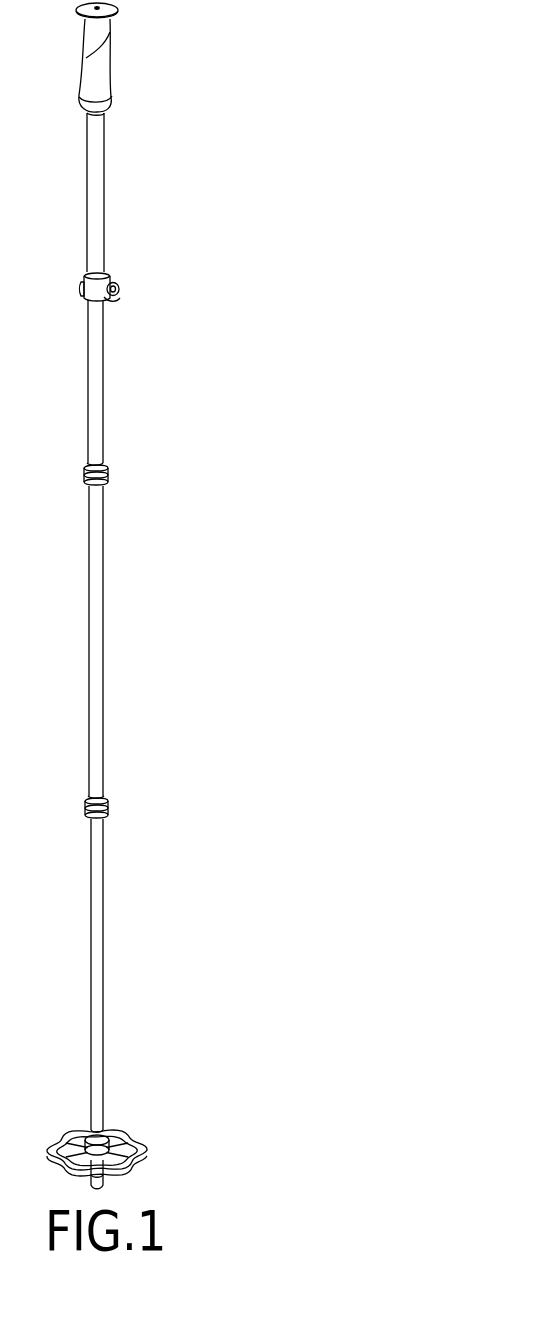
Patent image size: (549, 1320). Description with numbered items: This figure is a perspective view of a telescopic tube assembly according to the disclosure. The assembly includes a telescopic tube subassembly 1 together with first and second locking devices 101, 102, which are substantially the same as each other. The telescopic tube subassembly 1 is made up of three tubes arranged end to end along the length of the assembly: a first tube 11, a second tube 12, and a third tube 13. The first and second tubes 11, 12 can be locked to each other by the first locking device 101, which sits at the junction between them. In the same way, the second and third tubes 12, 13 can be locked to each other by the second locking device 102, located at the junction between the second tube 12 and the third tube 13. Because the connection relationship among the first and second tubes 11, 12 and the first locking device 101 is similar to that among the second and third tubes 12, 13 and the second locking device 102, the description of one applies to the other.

The telescopic tube subassembly 1 is at (164, 596).
The first tube 11 is at (97, 383).
The second tube 12 is at (98, 625).
The third tube 13 is at (100, 968).
The first locking device 101 is at (138, 469).
The second locking device 102 is at (138, 803).